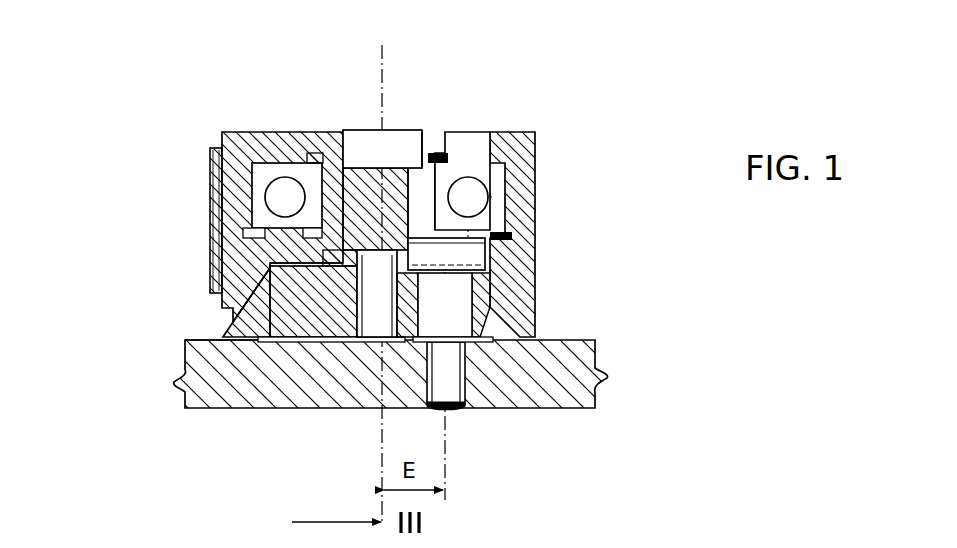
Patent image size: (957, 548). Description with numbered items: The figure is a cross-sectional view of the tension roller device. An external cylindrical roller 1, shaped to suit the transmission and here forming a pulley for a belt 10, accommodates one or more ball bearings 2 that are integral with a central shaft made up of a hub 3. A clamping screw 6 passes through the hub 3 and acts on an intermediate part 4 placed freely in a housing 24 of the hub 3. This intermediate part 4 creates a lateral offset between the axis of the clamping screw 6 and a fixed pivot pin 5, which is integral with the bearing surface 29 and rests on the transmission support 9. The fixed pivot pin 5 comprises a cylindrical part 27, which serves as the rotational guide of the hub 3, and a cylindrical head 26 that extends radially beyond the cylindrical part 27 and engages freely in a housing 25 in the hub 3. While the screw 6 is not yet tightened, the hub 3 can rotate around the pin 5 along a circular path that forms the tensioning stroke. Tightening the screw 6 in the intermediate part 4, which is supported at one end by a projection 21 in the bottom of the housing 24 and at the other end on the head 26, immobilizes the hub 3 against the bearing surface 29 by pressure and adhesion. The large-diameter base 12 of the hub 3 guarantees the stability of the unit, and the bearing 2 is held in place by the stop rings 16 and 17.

The external cylindrical roller 1 is at (240, 153).
The ball bearing 2 is at (285, 195).
The hub 3 is at (337, 172).
The intermediate part 4 is at (297, 298).
The fixed pivot pin 5 is at (448, 303).
The clamping screw 6 is at (372, 297).
The transmission support 9 is at (210, 382).
The belt 10 is at (210, 195).
The large-diameter base 12 is at (217, 333).
The stop ring 16 is at (515, 222).
The stop ring 17 is at (445, 156).
The projection 21 is at (287, 263).
The housing 24 is at (340, 262).
The housing 25 is at (433, 227).
The cylindrical head 26 is at (475, 256).
The cylindrical part 27 is at (485, 303).
The bearing surface 29 is at (188, 343).